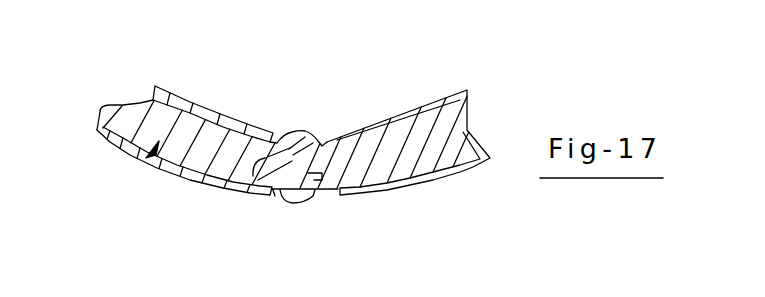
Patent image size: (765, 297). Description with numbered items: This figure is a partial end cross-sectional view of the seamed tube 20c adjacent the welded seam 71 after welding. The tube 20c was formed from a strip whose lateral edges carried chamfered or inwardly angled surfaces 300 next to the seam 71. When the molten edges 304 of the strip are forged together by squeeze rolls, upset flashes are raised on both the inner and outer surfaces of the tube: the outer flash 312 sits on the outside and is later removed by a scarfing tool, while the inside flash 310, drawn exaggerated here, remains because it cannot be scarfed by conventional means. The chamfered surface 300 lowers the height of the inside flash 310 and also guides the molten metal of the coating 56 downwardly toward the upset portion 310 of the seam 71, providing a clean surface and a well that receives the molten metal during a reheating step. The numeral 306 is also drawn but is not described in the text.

The seamed tube 20c is at (147, 160).
The coating 56 is at (220, 192).
The welded seam 71 is at (358, 123).
The chamfered surface 300 is at (273, 134).
The molten edges 304 is at (252, 186).
The lower connecting piece 306 is at (288, 204).
The inside flash 310 is at (303, 131).
The outer flash 312 is at (300, 200).